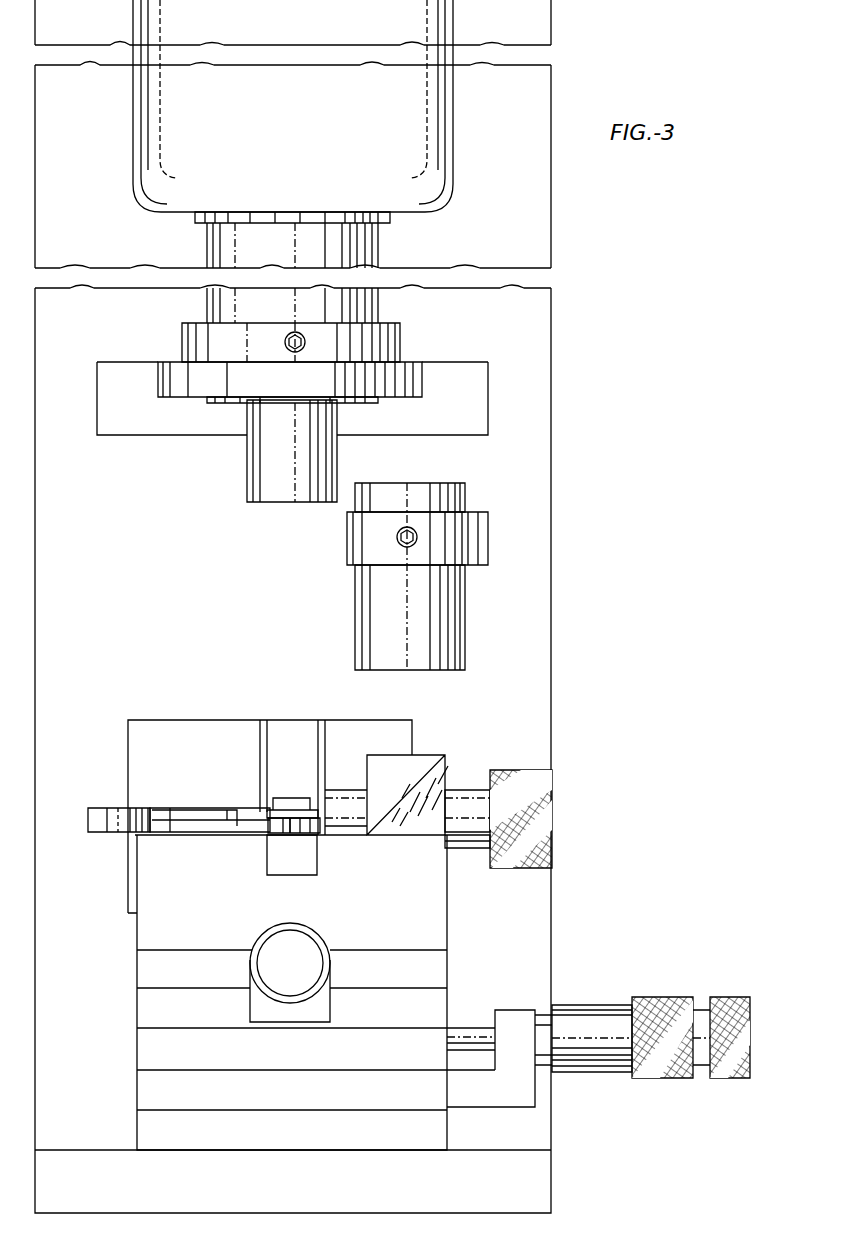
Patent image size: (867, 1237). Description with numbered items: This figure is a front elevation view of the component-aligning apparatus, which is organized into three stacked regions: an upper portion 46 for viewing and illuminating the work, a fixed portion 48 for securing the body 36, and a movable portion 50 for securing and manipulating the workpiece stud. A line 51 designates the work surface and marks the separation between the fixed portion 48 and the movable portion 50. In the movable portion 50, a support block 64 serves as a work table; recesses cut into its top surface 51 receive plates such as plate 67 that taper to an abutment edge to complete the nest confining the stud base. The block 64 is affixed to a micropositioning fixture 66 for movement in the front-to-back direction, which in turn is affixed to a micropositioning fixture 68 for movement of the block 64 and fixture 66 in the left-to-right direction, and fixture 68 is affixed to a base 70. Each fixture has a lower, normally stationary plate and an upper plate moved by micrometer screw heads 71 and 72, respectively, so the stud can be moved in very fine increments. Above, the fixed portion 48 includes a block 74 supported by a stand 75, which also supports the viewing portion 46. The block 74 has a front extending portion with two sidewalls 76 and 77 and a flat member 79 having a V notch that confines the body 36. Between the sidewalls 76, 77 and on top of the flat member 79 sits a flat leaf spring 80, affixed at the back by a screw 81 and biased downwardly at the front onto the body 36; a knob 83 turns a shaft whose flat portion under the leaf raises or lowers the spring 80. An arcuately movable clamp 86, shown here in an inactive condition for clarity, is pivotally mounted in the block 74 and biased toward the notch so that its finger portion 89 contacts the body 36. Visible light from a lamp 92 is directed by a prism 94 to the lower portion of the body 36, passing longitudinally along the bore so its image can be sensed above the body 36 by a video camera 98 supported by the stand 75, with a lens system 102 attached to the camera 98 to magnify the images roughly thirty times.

The body 36 is at (290, 832).
The upper portion 46 is at (522, 433).
The fixed portion 48 is at (498, 711).
The movable portion 50 is at (462, 942).
The work surface 51 is at (348, 830).
The support block 64 is at (145, 933).
The micropositioning fixture 66 is at (248, 1005).
The plate 67 is at (308, 862).
The micropositioning fixture 68 is at (515, 1010).
The base 70 is at (143, 1133).
The micrometer screw head 71 is at (268, 930).
The micrometer screw head 72 is at (657, 997).
The block 74 is at (175, 718).
The stand 75 is at (552, 527).
The sidewall 76 is at (260, 738).
The sidewall 77 is at (322, 730).
The flat member 79 is at (330, 822).
The leaf spring 80 is at (280, 795).
The screw 81 is at (300, 796).
The knob 83 is at (515, 770).
The clamp 86 is at (88, 816).
The finger portion 89 is at (248, 825).
The lamp 92 is at (465, 627).
The prism 94 is at (428, 762).
The video camera 98 is at (455, 172).
The lens system 102 is at (403, 343).